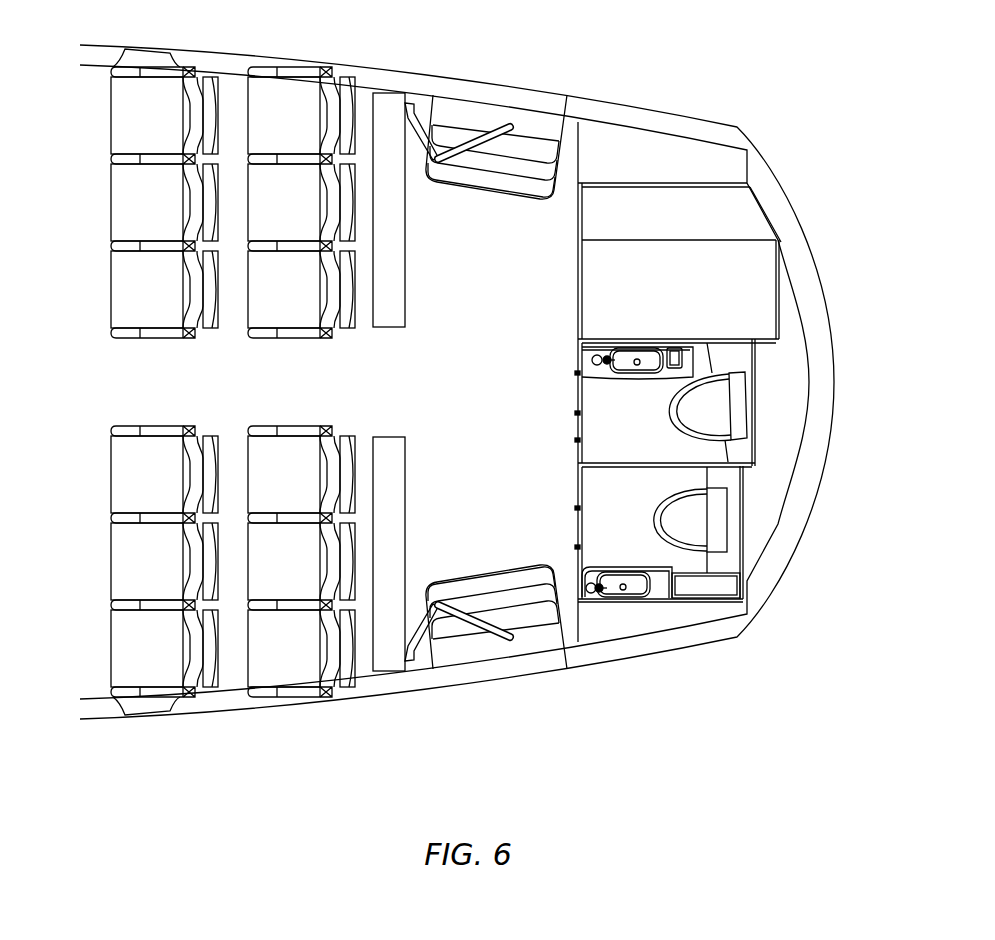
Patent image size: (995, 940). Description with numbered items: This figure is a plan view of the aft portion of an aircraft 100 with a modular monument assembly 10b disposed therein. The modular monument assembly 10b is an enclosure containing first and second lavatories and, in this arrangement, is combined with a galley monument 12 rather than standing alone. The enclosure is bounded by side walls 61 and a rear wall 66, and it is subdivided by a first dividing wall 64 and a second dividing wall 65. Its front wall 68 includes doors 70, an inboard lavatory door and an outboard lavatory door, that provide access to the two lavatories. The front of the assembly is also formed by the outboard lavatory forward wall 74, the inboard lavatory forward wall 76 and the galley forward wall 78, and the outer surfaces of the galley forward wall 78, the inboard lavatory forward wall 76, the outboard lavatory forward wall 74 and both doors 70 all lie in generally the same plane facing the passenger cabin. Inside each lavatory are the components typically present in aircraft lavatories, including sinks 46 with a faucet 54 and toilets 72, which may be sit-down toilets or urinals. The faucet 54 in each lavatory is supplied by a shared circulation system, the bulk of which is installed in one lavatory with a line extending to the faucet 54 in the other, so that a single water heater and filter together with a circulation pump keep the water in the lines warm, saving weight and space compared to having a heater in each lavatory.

The aircraft 100 is at (718, 130).
The galley monument 12 is at (733, 215).
The side walls 61 is at (663, 180).
The rear wall 66 is at (755, 370).
The galley forward wall 78 is at (577, 285).
The front wall 68 is at (577, 357).
The inboard lavatory forward wall 76 is at (578, 358).
The modular monument assembly 10b is at (664, 425).
The doors 70 is at (578, 435).
The outboard lavatory forward wall 74 is at (578, 562).
The first dividing wall 64 is at (610, 460).
The second dividing wall 65 is at (725, 337).
The faucet 54 is at (635, 350).
The sinks 46 is at (645, 350).
The toilets 72 is at (693, 421).